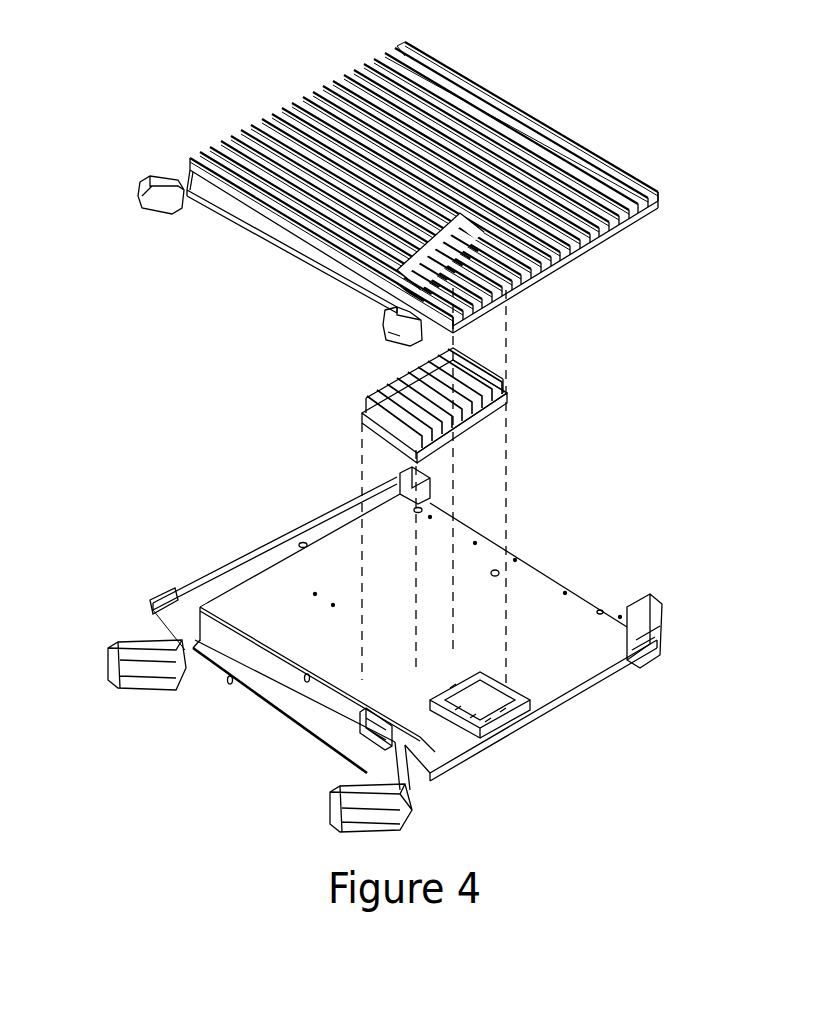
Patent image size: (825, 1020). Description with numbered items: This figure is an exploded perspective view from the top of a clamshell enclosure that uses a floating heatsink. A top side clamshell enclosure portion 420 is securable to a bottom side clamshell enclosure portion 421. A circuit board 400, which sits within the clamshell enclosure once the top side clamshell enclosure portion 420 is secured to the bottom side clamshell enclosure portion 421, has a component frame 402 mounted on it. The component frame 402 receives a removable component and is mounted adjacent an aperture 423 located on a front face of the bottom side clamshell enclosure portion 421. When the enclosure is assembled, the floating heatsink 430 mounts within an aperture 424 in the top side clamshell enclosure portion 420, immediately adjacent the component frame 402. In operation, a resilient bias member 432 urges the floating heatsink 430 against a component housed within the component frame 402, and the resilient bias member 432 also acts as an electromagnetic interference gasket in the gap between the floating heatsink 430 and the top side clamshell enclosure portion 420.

The circuit board 400 is at (583, 608).
The component frame 402 is at (463, 693).
The top side clamshell enclosure portion 420 is at (577, 140).
The bottom side clamshell enclosure portion 421 is at (635, 663).
The aperture 423 is at (363, 727).
The aperture 424 is at (397, 272).
The floating heatsink 430 is at (365, 410).
The resilient bias member 432 is at (497, 383).